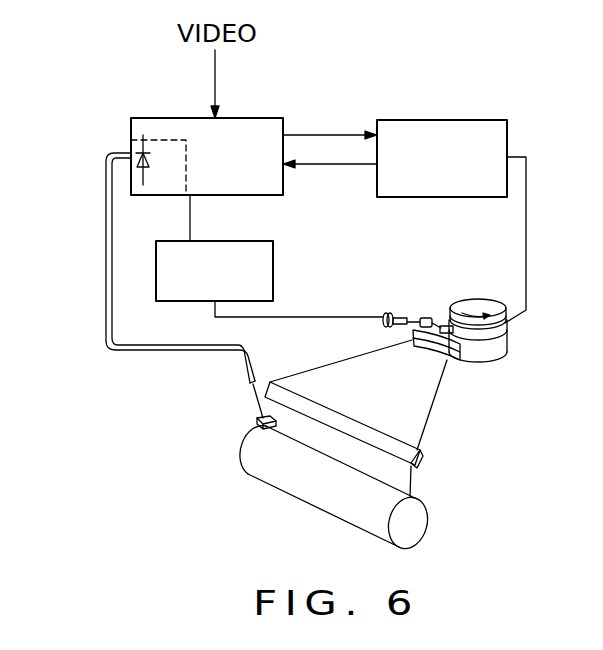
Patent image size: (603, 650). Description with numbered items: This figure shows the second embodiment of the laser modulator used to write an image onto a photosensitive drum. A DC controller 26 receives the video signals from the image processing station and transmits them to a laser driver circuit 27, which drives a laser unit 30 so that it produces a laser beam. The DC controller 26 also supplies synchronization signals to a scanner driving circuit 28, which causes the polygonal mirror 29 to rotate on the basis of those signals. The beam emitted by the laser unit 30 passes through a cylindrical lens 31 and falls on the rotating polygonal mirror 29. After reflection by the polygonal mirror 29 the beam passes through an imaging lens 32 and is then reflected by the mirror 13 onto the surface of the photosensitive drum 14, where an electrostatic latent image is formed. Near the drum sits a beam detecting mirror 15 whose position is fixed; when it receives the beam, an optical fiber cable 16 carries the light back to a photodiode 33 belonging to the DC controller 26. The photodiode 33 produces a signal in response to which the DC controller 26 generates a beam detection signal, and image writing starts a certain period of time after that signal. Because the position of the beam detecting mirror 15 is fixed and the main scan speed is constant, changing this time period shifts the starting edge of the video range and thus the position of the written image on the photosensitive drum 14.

The mirror 13 is at (423, 465).
The photosensitive drum 14 is at (413, 525).
The beam detecting mirror 15 is at (256, 418).
The optical fiber cable 16 is at (121, 352).
The DC controller 26 is at (243, 118).
The laser driver circuit 27 is at (245, 242).
The scanner driving circuit 28 is at (452, 120).
The polygonal mirror 29 is at (498, 348).
The laser unit 30 is at (390, 313).
The cylindrical lens 31 is at (425, 320).
The imaging lens 32 is at (467, 358).
The photodiode 33 is at (155, 165).